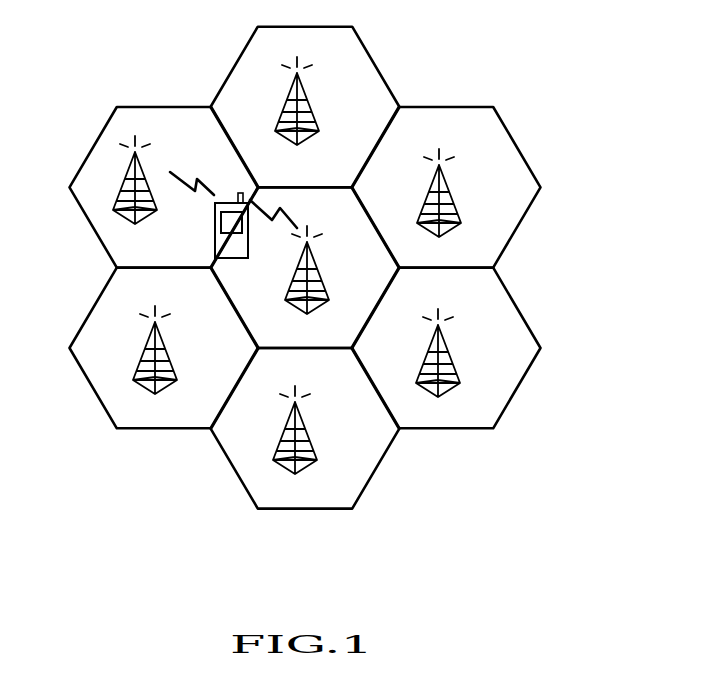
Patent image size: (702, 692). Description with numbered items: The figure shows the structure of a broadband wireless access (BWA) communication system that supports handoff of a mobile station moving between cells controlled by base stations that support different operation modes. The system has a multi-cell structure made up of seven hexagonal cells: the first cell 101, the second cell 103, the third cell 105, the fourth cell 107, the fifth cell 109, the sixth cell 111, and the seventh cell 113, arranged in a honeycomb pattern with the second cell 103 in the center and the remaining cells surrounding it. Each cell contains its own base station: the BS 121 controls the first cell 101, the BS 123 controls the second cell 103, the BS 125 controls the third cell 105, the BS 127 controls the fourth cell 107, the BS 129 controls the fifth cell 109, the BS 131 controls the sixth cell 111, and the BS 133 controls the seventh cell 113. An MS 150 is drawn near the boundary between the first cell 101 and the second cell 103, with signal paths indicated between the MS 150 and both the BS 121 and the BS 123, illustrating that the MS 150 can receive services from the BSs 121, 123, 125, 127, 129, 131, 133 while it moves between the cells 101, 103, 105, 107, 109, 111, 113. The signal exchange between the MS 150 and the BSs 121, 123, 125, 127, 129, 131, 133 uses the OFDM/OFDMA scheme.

The cell 1 101 is at (162, 106).
The cell 2 103 is at (388, 250).
The cell 3 105 is at (377, 68).
The cell 4 107 is at (520, 150).
The cell 5 109 is at (520, 310).
The cell 6 111 is at (373, 468).
The cell 7 113 is at (162, 430).
The BS 121 is at (147, 173).
The BS 123 is at (318, 280).
The BS 125 is at (311, 112).
The BS 127 is at (449, 201).
The BS 129 is at (452, 362).
The BS 131 is at (310, 440).
The BS 133 is at (167, 362).
The MS 150 is at (215, 255).